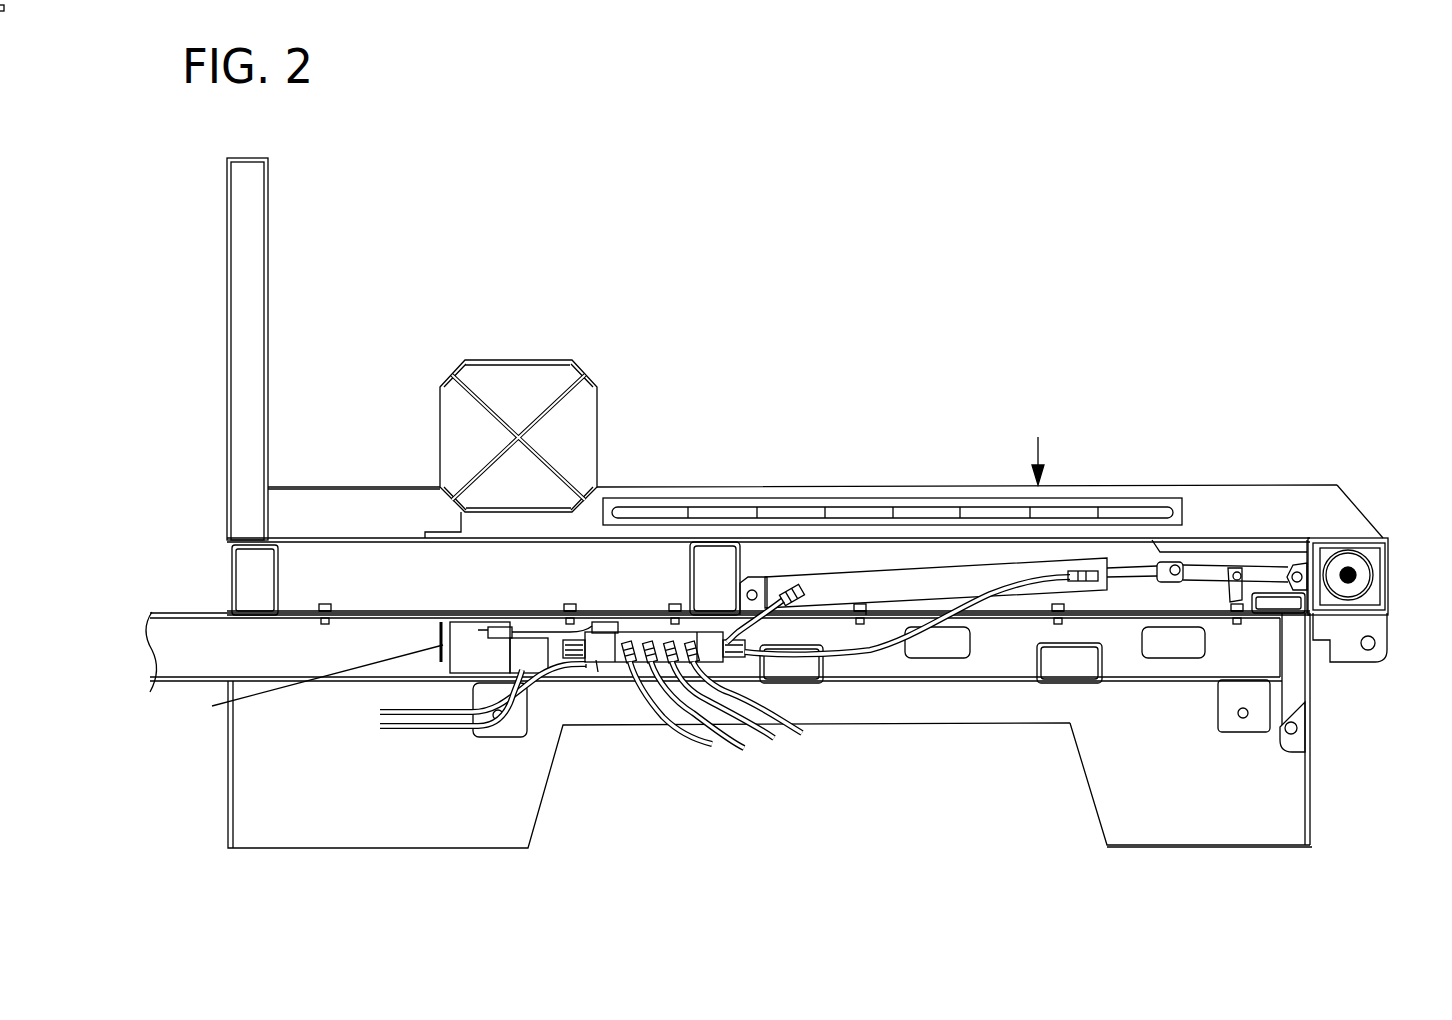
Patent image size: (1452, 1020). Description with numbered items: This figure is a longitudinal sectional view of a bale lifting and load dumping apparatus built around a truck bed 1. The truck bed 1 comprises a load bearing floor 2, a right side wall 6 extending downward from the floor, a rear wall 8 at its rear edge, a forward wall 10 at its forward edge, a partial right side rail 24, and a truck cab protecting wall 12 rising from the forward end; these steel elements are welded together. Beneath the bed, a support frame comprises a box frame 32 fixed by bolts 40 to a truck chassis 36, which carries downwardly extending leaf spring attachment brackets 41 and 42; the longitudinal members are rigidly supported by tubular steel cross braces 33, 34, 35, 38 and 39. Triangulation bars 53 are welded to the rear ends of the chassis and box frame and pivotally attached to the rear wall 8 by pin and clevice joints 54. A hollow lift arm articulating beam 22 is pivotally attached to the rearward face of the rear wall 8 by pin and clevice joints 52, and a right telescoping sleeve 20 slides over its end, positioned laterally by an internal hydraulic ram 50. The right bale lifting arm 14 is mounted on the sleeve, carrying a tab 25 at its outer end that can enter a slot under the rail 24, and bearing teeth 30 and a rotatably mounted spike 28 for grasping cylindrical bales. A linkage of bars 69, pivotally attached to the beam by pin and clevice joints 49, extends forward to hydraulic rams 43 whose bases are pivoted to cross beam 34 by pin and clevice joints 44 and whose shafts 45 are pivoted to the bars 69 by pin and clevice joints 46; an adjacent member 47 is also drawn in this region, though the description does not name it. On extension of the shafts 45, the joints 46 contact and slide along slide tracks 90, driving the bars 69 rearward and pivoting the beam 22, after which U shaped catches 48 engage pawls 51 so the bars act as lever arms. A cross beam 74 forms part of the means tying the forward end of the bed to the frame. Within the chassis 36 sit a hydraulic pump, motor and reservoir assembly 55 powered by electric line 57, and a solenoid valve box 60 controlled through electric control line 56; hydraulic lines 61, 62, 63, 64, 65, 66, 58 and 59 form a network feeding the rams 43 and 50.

The truck bed 1 is at (1037, 449).
The load bearing floor 2 is at (345, 510).
The right side wall 6 is at (1143, 802).
The rear wall 8 is at (1310, 805).
The forward wall 10 is at (228, 780).
The truck cab protecting wall 12 is at (270, 276).
The right bale lifting arm 14 is at (1213, 510).
The right telescoping sleeve 20 is at (1390, 560).
The lift arm articulating beam 22 is at (1390, 585).
The partial right side rail 24 is at (292, 510).
The tab 25 is at (430, 527).
The spike 28 is at (520, 388).
The teeth 30 is at (868, 515).
The box frame 32 is at (645, 565).
The cross brace 33 is at (228, 560).
The cross beam 34 is at (745, 585).
The cross brace 35 is at (1310, 683).
The truck chassis 36 is at (230, 637).
The cross brace 38 is at (815, 700).
The cross brace 39 is at (1068, 683).
The bolt 40 is at (675, 600).
The leaf spring attachment bracket 41 is at (520, 733).
The leaf spring attachment bracket 42 is at (1233, 728).
The hydraulic ram 43 is at (925, 585).
The pin and clevice joint 44 is at (775, 590).
The shaft 45 is at (1165, 562).
The pin and clevice joint 46 is at (1186, 566).
The channel member 47 is at (1100, 493).
The "U" shaped catch 48 is at (1244, 572).
The pin and clevice joint 49 is at (1306, 562).
The hydraulic ram 50 is at (1370, 528).
The pawl 51 is at (1325, 620).
The pin and clevice joint 52 is at (1340, 660).
The triangulation bar 53 is at (1310, 717).
The pin and clevice joint 54 is at (1308, 760).
The hydraulic pump and reservoir assembly 55 is at (480, 647).
The electric control line 56 is at (465, 728).
The electric line 57 is at (437, 712).
The hydraulic line 58 is at (937, 600).
The hydraulic line 59 is at (858, 618).
The valve box 60 is at (612, 630).
The hydraulic flow line 61 is at (792, 740).
The hydraulic flow line 62 is at (755, 745).
The hydraulic flow line 63 is at (718, 748).
The hydraulic flow line 64 is at (672, 742).
The hydraulic flow line 65 is at (598, 735).
The hydraulic flow line 66 is at (598, 723).
The bar 69 is at (1232, 570).
The cross beam 74 is at (212, 706).
The slide track 90 is at (1303, 548).